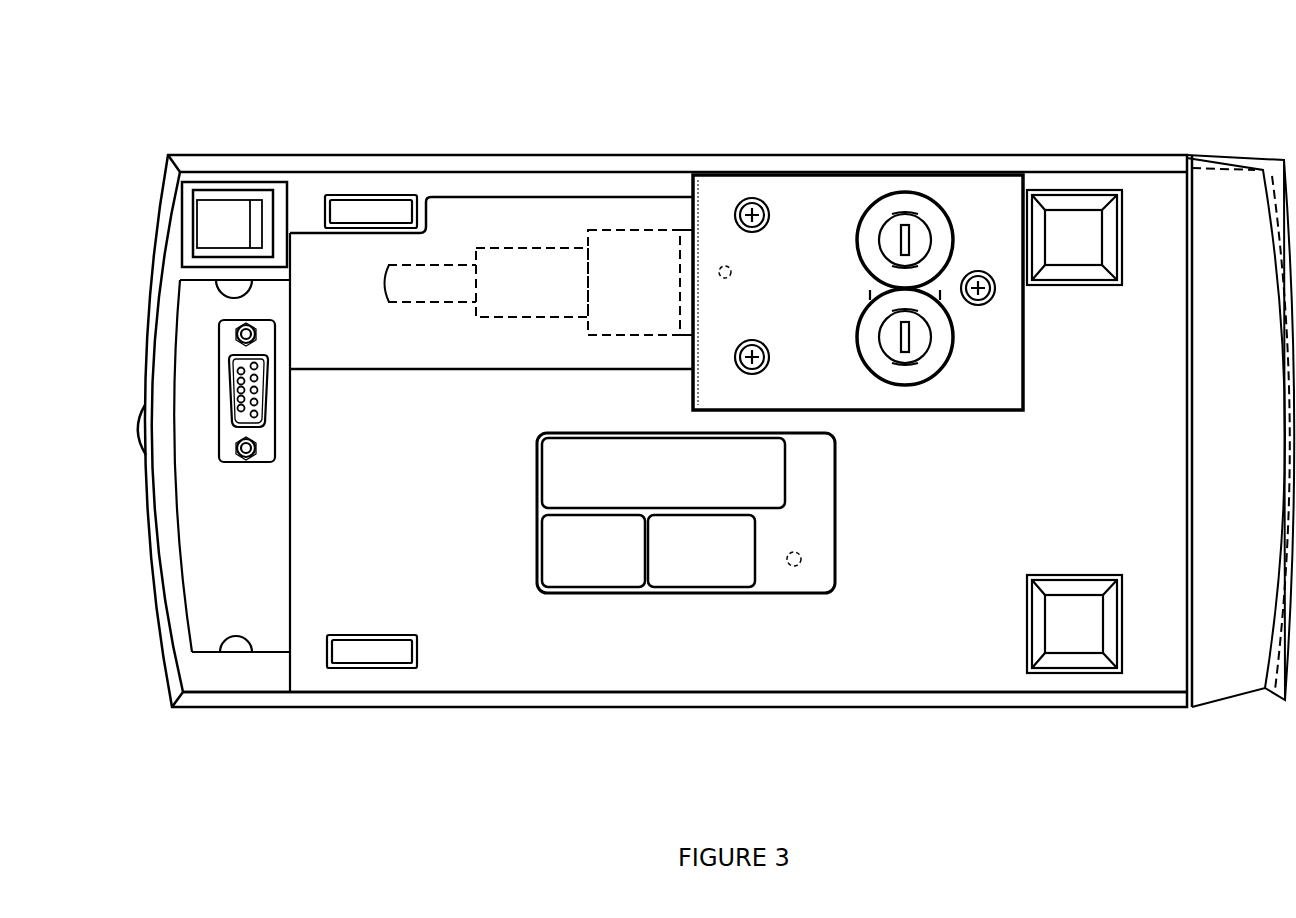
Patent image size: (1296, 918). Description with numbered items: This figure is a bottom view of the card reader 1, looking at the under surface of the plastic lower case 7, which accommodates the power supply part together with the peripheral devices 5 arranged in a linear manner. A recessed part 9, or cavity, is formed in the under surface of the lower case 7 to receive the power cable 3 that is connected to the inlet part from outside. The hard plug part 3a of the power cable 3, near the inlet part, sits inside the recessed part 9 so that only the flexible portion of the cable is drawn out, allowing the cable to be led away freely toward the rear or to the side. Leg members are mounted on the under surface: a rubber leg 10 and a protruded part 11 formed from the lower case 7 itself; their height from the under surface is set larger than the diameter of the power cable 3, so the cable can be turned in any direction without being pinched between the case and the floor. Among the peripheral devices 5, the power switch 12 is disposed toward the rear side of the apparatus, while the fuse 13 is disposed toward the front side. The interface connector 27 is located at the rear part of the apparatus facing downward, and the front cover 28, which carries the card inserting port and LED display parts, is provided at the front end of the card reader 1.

The card reader 1 is at (118, 128).
The power cable 3 is at (607, 245).
The hard portion (plug part) of the power cable 3a is at (657, 220).
The peripheral devices 5 is at (860, 146).
The lower case 7 is at (990, 675).
The recessed part 9 is at (480, 215).
The rubber leg 10 is at (1075, 215).
The protruded part 11 is at (376, 215).
The power switch 12 is at (218, 215).
The fuse 13 is at (940, 232).
The interface connector 27 is at (238, 378).
The front cover 28 is at (1226, 188).